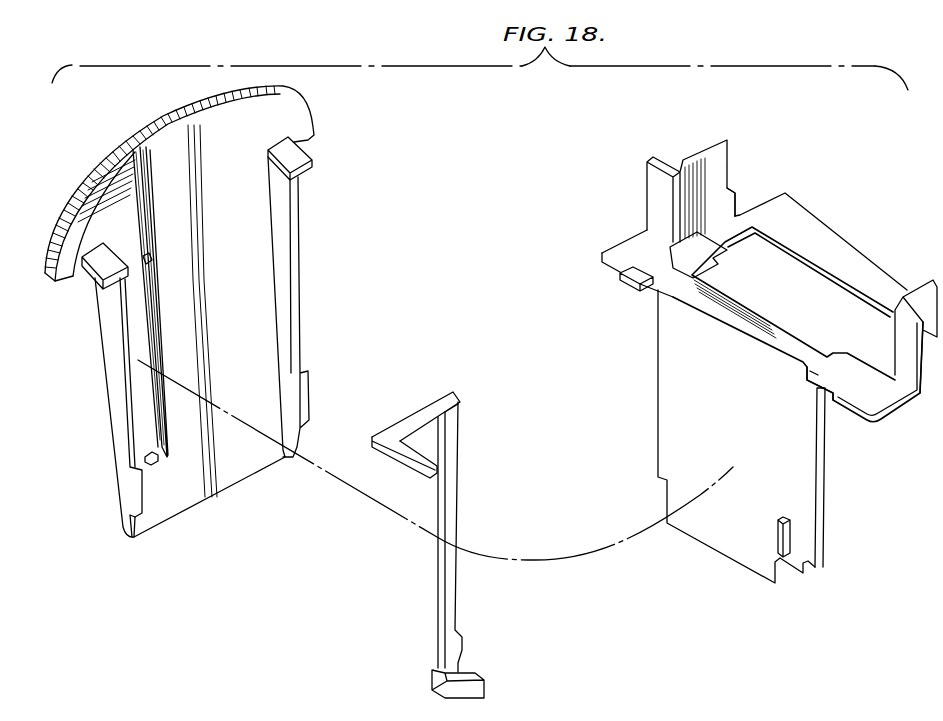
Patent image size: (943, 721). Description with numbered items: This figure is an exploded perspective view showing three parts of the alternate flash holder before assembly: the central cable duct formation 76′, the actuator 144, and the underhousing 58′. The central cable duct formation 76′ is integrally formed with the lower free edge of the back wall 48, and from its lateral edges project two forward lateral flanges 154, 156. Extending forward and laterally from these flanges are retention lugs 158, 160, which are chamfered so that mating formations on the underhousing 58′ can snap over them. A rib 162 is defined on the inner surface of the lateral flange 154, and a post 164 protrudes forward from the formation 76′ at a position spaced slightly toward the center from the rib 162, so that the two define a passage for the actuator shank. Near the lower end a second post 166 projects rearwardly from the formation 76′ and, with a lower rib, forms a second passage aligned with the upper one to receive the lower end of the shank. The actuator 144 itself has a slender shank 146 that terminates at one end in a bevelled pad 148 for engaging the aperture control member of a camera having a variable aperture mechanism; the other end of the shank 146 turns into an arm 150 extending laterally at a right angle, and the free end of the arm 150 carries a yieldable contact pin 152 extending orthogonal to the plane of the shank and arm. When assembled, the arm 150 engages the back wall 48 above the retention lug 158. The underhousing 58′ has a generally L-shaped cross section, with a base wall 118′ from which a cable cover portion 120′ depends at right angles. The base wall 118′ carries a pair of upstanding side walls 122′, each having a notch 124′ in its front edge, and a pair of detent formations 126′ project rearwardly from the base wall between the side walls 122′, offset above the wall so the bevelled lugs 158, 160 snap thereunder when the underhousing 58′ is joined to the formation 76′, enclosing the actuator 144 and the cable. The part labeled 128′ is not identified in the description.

The back wall 48 is at (305, 111).
The central cable duct formation 76′ is at (200, 311).
The lateral flange 154 is at (112, 363).
The lateral flange 156 is at (282, 221).
The retention lug 158 is at (97, 280).
The retention lug 160 is at (298, 156).
The rib 162 is at (131, 281).
The post 164 is at (150, 259).
The post 166 is at (152, 465).
The actuator 144 is at (450, 520).
The shank 146 is at (455, 603).
The bevelled pad 148 is at (480, 690).
The arm 150 is at (425, 400).
The contact pin 152 is at (410, 467).
The underhousing 58′ is at (748, 345).
The base wall 118′ is at (802, 217).
The cable cover portion 120′ is at (665, 378).
The side walls 122′ is at (710, 162).
The notch 124′ is at (728, 192).
The detent formations 126′ is at (812, 385).
The tab 128′ is at (630, 283).